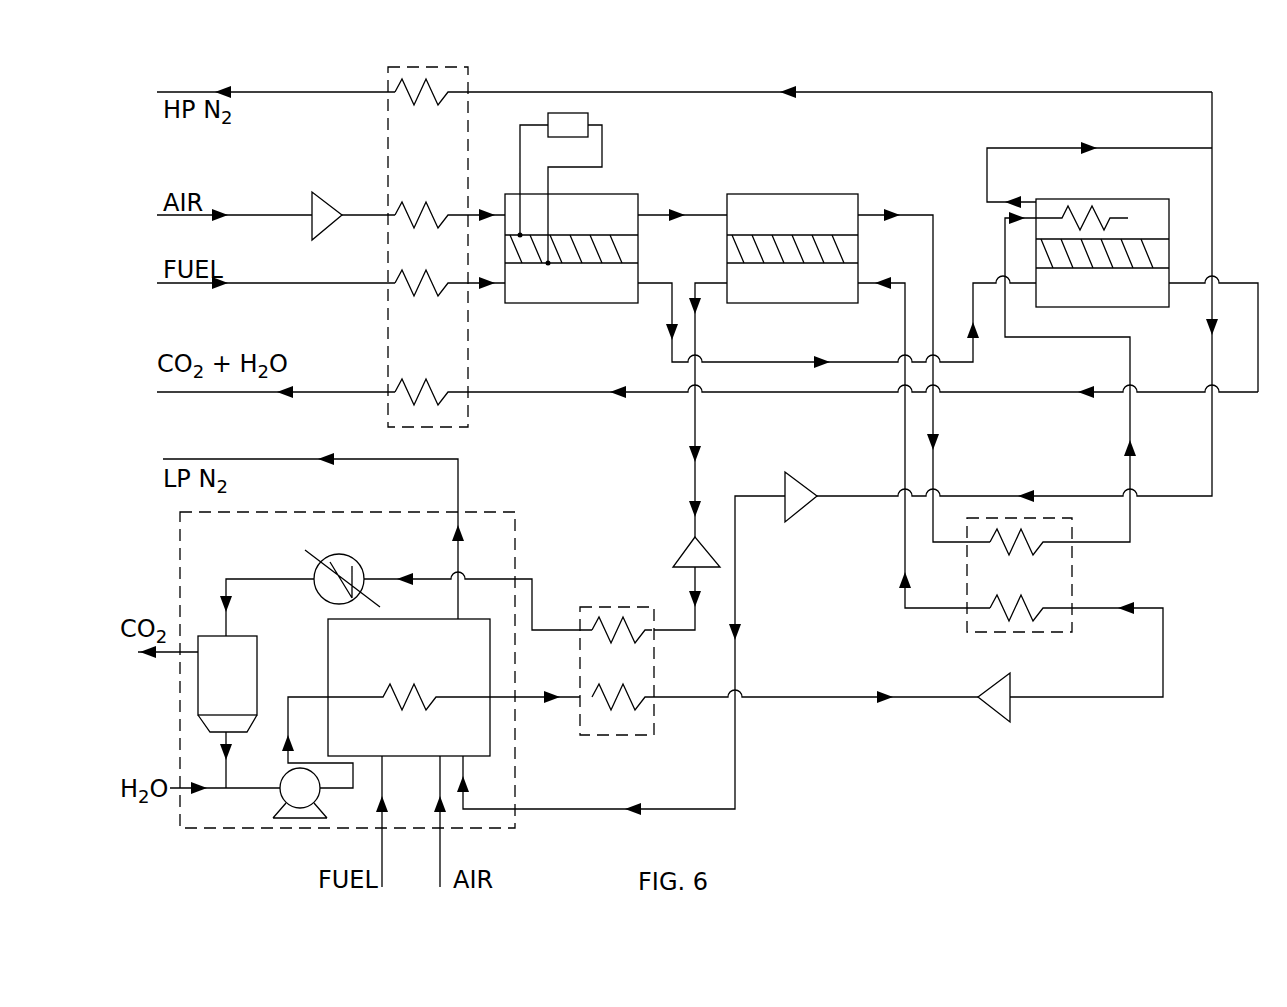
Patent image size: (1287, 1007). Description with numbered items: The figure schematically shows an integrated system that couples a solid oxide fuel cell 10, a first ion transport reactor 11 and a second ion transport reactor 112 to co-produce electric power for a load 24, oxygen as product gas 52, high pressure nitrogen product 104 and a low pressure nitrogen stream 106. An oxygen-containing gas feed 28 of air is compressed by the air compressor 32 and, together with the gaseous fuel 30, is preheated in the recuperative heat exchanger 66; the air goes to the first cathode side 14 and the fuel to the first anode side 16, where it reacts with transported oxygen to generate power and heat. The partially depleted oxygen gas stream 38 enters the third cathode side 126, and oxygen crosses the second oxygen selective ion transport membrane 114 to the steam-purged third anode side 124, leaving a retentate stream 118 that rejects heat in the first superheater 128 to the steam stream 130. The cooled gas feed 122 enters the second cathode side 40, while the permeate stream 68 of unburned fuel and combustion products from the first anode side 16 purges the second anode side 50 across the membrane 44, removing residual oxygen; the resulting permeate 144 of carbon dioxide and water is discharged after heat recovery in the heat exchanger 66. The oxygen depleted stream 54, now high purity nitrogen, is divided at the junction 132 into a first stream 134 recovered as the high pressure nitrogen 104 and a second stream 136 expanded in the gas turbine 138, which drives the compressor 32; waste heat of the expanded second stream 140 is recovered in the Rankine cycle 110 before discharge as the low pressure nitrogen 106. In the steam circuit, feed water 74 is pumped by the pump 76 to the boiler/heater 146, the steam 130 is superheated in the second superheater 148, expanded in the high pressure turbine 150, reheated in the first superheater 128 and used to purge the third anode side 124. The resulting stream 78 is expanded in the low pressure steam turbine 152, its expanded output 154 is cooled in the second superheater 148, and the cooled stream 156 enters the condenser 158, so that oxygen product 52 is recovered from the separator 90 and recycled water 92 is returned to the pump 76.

The solid oxide fuel cell 10 is at (595, 220).
The first ion transport reactor 11 is at (1147, 269).
The first cathode side 14 is at (626, 234).
The first anode side 16 is at (614, 263).
The load 24 is at (570, 124).
The oxygen-containing gas feed 28 is at (256, 213).
The gaseous fuel 30 is at (266, 282).
The air compressor 32 is at (326, 210).
The partially depleted oxygen gas stream 38 is at (698, 214).
The second cathode side 40 is at (1150, 238).
The electrolyte of second cell 44 is at (1064, 264).
The second anode side 50 is at (1159, 270).
The oxygen product gas 52 is at (172, 653).
The oxygen depleted stream 54 is at (1036, 148).
The recuperative heat exchanger 66 is at (405, 336).
The permeate stream 68 is at (670, 322).
The feed water 74 is at (208, 790).
The pump 76 is at (316, 811).
The anode purge exhaust stream 78 is at (698, 336).
The separator 90 is at (243, 702).
The recycled water 92 is at (232, 781).
The high pressure nitrogen product 104 is at (190, 92).
The low pressure nitrogen stream 106 is at (241, 459).
The Rankine cycle 110 is at (488, 541).
The second ion transport reactor 112 is at (826, 210).
The second oxygen selective ion transport membrane 114 is at (852, 254).
The retentate stream 118 is at (936, 222).
The partially oxygen depleted gas feed 122 is at (1060, 338).
The third anode side 124 is at (835, 264).
The third cathode side 126 is at (845, 234).
The first superheater 128 is at (1058, 580).
The steam stream 130 is at (902, 336).
The junction 132 is at (1214, 150).
The first stream 134 is at (1214, 102).
The second stream 136 is at (1214, 180).
The gas turbine 138 is at (796, 484).
The expanded second stream 140 is at (737, 597).
The permeate 144 is at (1154, 392).
The boiler/heater 146 is at (337, 662).
The second superheater 148 is at (643, 664).
The high pressure turbine 150 is at (997, 704).
The low pressure steam turbine 152 is at (697, 559).
The expanded output 154 is at (697, 580).
The cooled expanded output stream 156 is at (535, 608).
The condenser 158 is at (341, 561).